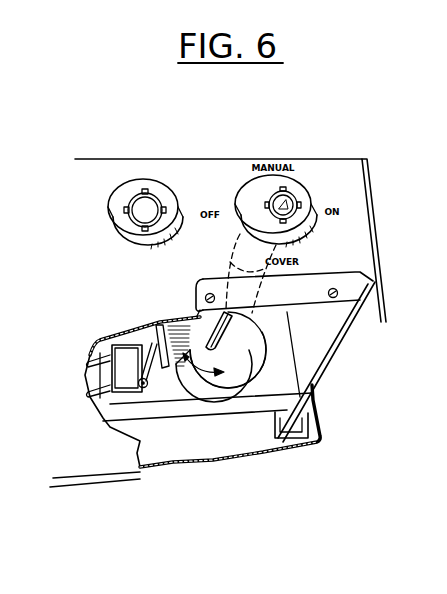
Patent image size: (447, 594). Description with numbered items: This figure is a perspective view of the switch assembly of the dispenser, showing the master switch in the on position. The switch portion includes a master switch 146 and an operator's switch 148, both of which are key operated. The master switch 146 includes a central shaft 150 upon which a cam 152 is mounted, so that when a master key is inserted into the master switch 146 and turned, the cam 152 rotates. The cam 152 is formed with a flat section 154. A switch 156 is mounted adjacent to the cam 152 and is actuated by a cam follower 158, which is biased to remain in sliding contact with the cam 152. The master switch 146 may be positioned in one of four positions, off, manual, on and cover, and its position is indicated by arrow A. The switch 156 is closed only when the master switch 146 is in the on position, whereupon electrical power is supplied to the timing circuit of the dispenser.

The master switch 146 is at (308, 168).
The operator's switch 148 is at (157, 172).
The central shaft 150 is at (236, 322).
The cam 152 is at (267, 360).
The flat section 154 is at (165, 368).
The switch 156 is at (125, 367).
The cam follower 158 is at (146, 322).
The arrow A is at (288, 199).